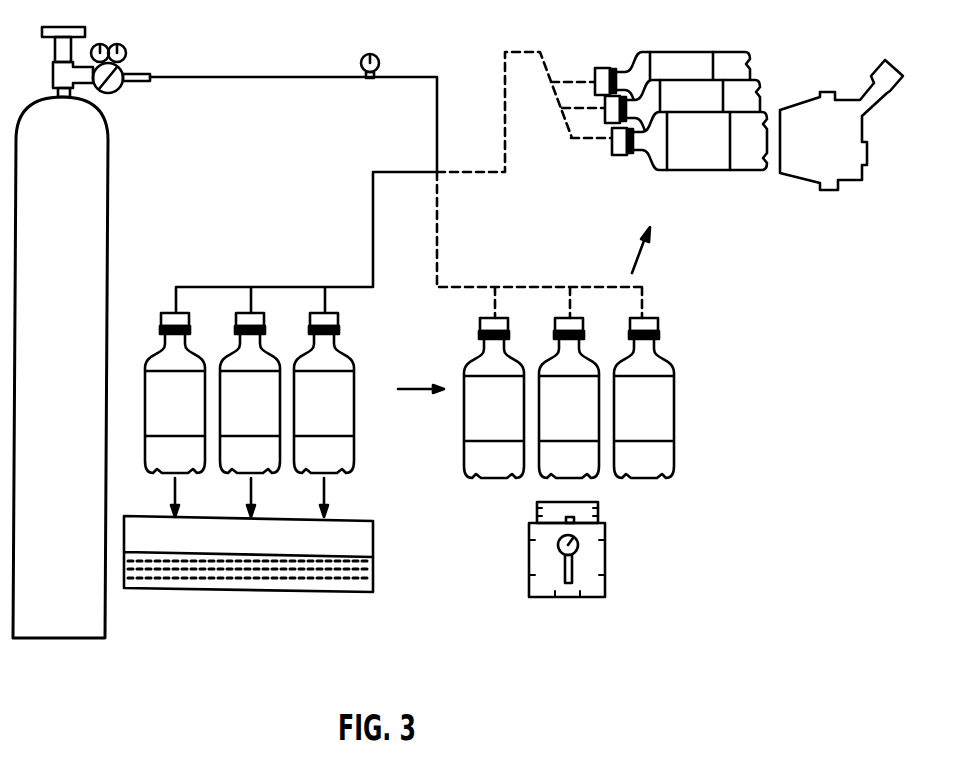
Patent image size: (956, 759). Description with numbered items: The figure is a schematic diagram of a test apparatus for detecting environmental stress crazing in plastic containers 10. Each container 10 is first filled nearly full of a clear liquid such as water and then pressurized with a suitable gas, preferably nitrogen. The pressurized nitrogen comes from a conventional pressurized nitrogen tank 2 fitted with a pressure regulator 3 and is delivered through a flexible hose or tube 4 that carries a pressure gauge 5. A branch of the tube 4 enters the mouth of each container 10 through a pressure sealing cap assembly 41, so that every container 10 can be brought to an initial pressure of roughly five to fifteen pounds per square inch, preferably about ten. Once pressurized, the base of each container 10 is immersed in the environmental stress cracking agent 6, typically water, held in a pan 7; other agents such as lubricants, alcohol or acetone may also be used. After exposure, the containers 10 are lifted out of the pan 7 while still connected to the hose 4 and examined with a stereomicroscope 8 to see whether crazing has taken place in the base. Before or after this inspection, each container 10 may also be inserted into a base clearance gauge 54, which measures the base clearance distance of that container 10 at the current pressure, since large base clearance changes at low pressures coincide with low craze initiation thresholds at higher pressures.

The pressurized nitrogen tank 2 is at (96, 199).
The pressure regulator 3 is at (113, 49).
The flexible hose or tube 4 is at (373, 224).
The pressure gauge 5 is at (379, 61).
The environmental stress cracking agent 6 is at (374, 572).
The pan 7 is at (277, 592).
The stereomicroscope 8 is at (795, 175).
The container 10 is at (456, 265).
The pressure sealing cap assembly 41 is at (360, 340).
The base clearance gauge 54 is at (530, 567).